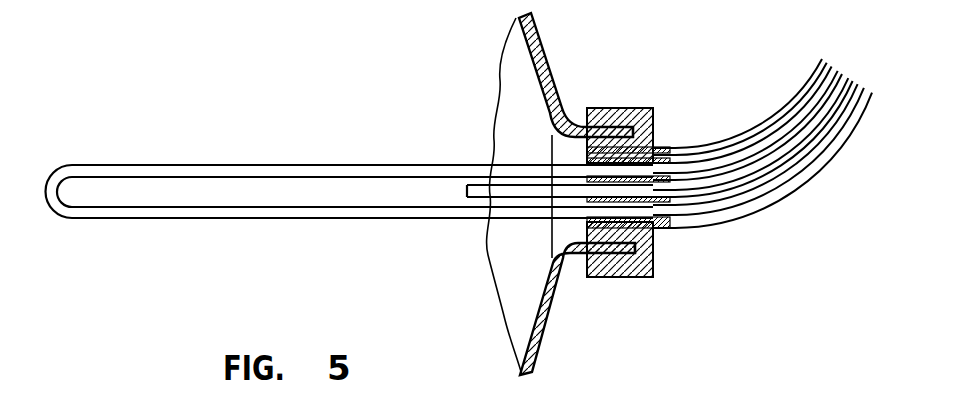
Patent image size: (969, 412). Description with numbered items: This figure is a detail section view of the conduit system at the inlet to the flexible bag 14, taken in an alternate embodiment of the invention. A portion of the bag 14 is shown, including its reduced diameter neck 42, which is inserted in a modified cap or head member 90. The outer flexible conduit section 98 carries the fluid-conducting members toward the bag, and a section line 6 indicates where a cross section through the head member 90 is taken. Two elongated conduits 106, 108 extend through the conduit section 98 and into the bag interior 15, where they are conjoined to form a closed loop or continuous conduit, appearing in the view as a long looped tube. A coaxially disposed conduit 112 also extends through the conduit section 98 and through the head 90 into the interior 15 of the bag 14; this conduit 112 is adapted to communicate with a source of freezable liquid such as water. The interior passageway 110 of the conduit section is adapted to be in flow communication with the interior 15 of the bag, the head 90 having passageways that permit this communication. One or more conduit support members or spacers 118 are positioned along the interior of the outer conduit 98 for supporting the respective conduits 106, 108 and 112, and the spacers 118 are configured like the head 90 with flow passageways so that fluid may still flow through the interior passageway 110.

The section line 6 is at (622, 70).
The bag 14 is at (540, 335).
The interior of the bag 15 is at (522, 255).
The neck 42 is at (600, 278).
The head member 90 is at (641, 282).
The flexible conduit section 98 is at (813, 178).
The elongated conduit 106 is at (347, 170).
The elongated conduit 108 is at (362, 210).
The interior passageway 110 is at (762, 192).
The coaxially disposed conduit 112 is at (483, 189).
The conduit support members or spacers 118 is at (839, 157).